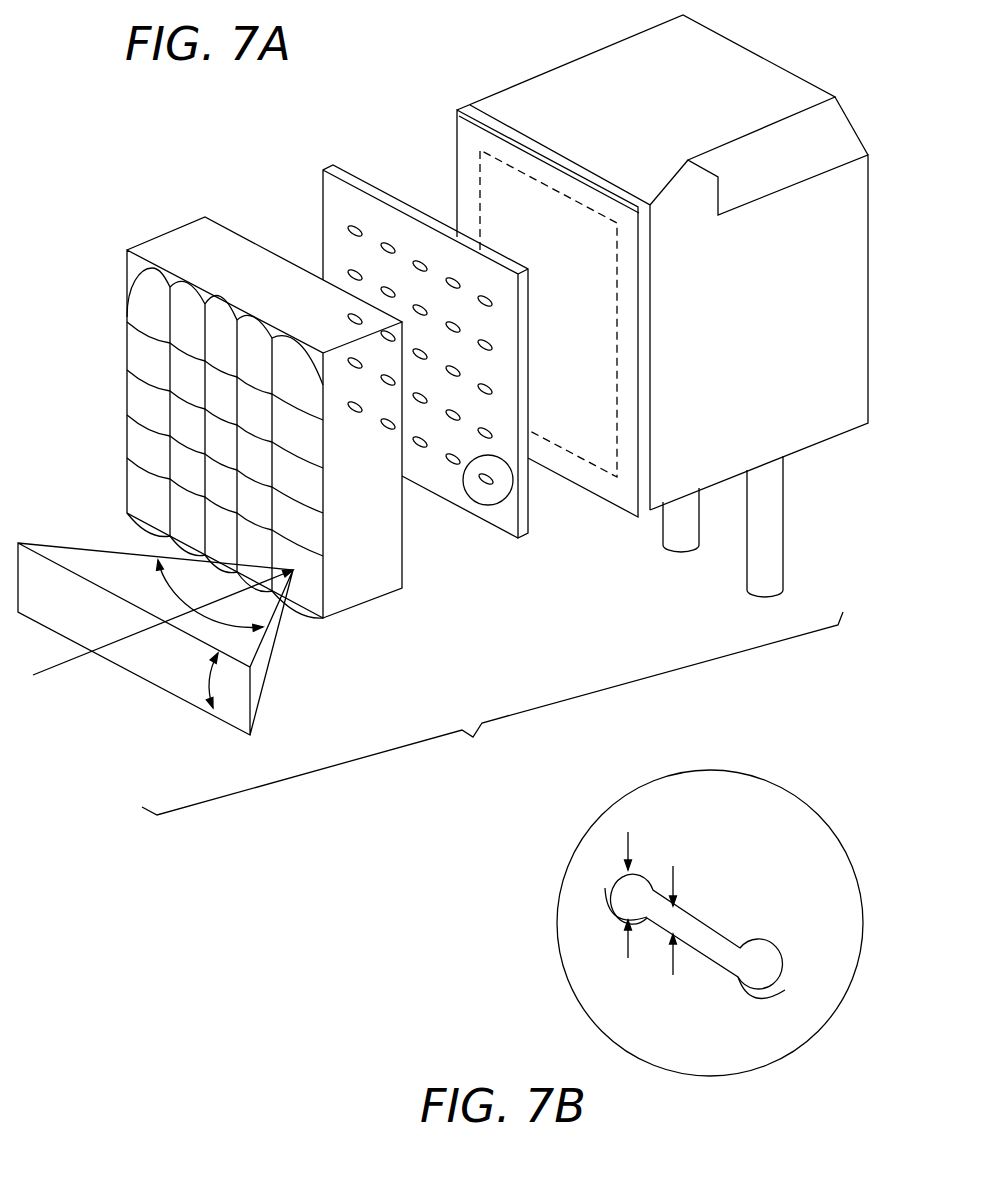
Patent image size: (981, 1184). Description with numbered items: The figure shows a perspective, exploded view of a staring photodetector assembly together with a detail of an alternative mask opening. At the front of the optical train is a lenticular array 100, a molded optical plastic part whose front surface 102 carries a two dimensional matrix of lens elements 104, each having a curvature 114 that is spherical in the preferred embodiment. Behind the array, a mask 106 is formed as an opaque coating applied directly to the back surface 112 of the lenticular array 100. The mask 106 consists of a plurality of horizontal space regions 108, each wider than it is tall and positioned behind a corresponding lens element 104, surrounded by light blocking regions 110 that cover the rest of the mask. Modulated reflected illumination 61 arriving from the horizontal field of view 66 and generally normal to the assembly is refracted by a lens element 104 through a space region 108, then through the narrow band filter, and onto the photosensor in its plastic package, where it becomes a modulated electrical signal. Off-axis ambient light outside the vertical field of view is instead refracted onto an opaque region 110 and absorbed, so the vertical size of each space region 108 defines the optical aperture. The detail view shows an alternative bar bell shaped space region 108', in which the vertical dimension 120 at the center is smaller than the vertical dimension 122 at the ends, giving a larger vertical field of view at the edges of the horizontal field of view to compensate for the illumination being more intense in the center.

In FIG. 7A, the mask 106 is at (327, 183).
In FIG. 7A, the light blocking regions 110 is at (447, 483).
In FIG. 7A, the horizontal space regions 108 is at (476, 519).
In FIG. 7A, the lenticular array 100 is at (172, 240).
In FIG. 7A, the back surface 112 is at (227, 228).
In FIG. 7A, the front surface 102 is at (143, 292).
In FIG. 7A, the curvature 114 is at (147, 352).
In FIG. 7A, the lens elements 104 is at (307, 573).
In FIG. 7A, the horizontal field of view 66 is at (167, 582).
In FIG. 7A, the modulated reflected illumination 61 is at (55, 668).
In FIG. 7B, the horizontal space region 108' is at (695, 956).
In FIG. 7B, the vertical dimension 122 is at (630, 835).
In FIG. 7B, the vertical dimension 120 is at (675, 870).